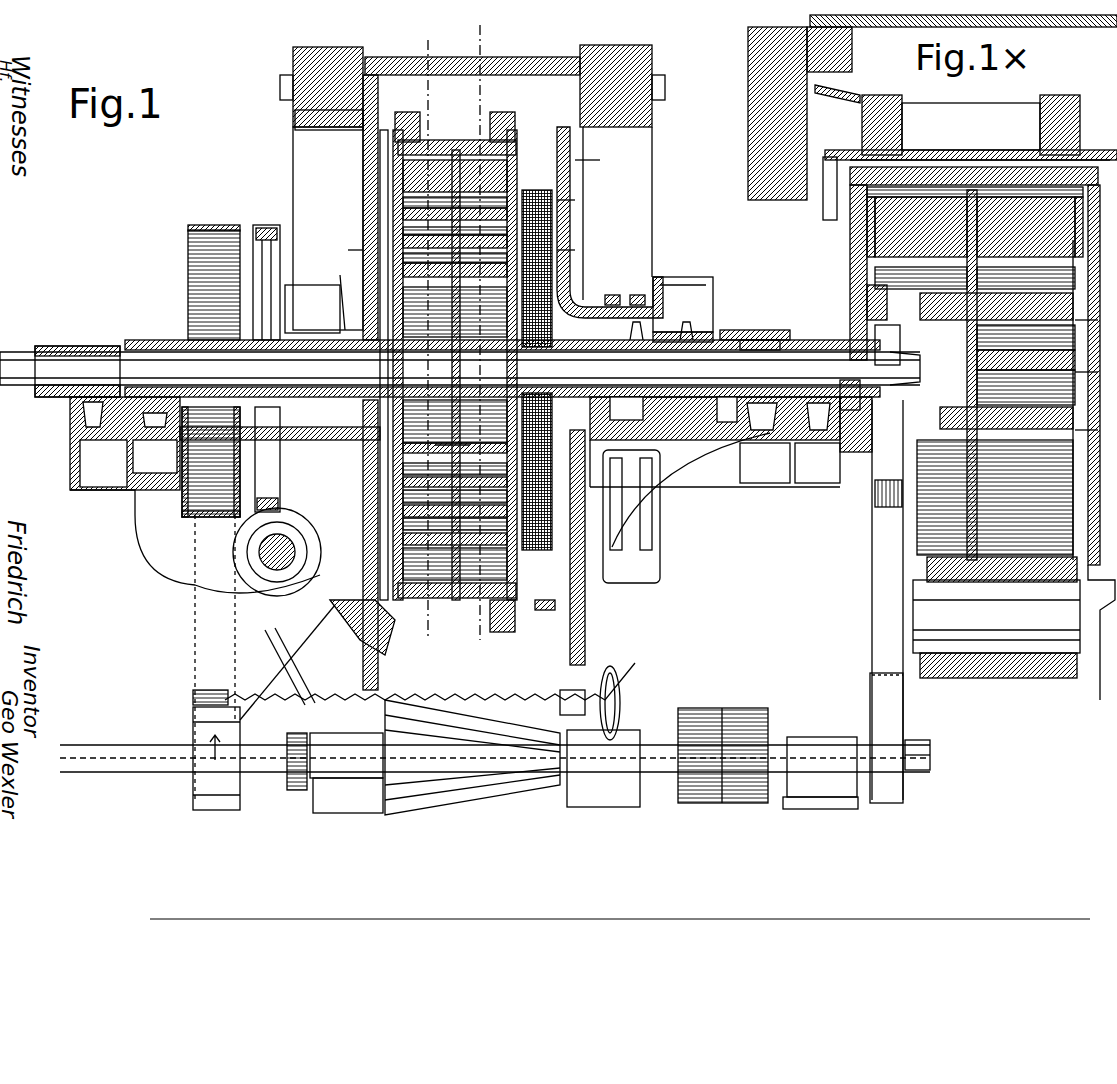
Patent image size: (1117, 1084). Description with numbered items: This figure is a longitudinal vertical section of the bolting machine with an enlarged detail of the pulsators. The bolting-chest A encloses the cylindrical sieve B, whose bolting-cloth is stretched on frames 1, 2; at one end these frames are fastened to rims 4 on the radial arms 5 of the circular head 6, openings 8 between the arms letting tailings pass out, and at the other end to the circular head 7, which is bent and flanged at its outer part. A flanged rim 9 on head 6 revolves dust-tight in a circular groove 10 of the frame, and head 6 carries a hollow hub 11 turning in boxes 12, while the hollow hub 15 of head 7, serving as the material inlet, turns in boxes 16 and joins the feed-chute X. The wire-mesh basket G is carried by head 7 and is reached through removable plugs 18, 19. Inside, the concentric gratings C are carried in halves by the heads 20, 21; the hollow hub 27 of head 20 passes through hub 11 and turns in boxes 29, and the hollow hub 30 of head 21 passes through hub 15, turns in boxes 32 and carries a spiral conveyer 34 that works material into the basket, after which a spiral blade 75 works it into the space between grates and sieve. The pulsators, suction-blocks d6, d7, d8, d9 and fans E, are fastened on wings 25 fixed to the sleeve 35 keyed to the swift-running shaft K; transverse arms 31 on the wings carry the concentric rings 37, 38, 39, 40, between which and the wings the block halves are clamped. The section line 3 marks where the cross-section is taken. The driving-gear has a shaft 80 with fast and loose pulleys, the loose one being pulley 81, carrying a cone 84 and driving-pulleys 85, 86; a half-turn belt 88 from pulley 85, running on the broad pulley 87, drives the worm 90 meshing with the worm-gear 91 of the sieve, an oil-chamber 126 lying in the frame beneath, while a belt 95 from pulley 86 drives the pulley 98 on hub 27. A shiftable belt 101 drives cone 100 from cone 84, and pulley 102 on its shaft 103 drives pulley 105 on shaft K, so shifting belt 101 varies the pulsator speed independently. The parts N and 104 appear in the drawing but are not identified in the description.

In FIG. 1, the swift-running shaft K is at (925, 360).
In FIG. 1x, the swift-running shaft K is at (996, 616).
In FIG. 1, the boxes 29 is at (148, 340).
In FIG. 1, the hollow hub 27 is at (118, 345).
In FIG. 1, the circular groove 10 is at (385, 62).
In FIG. 1x, the circular groove 10 is at (840, 65).
In FIG. 1, the flanged rim 9 is at (310, 75).
In FIG. 1x, the flanged rim 9 is at (964, 167).
In FIG. 1, the bolting-chest A is at (293, 126).
In FIG. 1, the head 21 is at (560, 140).
In FIG. 1x, the head 21 is at (1095, 442).
In FIG. 1, the concentric ring 37 is at (575, 155).
In FIG. 1x, the concentric ring 37 is at (866, 220).
In FIG. 1, the circular head 7 is at (545, 175).
In FIG. 1, the concentric ring 38 is at (520, 195).
In FIG. 1x, the concentric ring 38 is at (1096, 320).
In FIG. 1, the concentric ring 39 is at (560, 250).
In FIG. 1x, the concentric ring 39 is at (1096, 372).
In FIG. 1, the hollow hub 15 is at (593, 305).
In FIG. 1, the boxes 16 is at (618, 305).
In FIG. 1, the feed-chute X is at (680, 290).
In FIG. 1, the spiral conveyer 34 is at (661, 332).
In FIG. 1, the boxes 32 is at (755, 325).
In FIG. 1, the hollow hub 30 is at (795, 342).
In FIG. 1, the radial arms 5 is at (383, 170).
In FIG. 1, the openings 8 is at (393, 190).
In FIG. 1, the head 20 is at (363, 232).
In FIG. 1x, the head 20 is at (850, 268).
In FIG. 1, the circular head 6 is at (363, 252).
In FIG. 1, the hollow hub 11 is at (336, 294).
In FIG. 1, the boxes 12 is at (325, 330).
In FIG. 1, the spiral blade 75 is at (545, 625).
In FIG. 1, the rims 4 is at (400, 112).
In FIG. 1x, the rims 4 is at (840, 88).
In FIG. 1, the frame 1 is at (502, 112).
In FIG. 1x, the frame 1 is at (1055, 100).
In FIG. 1, the sieve B is at (445, 140).
In FIG. 1x, the sieve B is at (980, 144).
In FIG. 1, the wings 25 is at (458, 150).
In FIG. 1x, the wings 25 is at (995, 497).
In FIG. 1, the frame 2 is at (482, 30).
In FIG. 1x, the frame 2 is at (971, 126).
In FIG. 1, the section line 3 is at (430, 42).
In FIG. 1, the transverse arms 31 is at (455, 250).
In FIG. 1x, the transverse arms 31 is at (970, 395).
In FIG. 1, the sleeve 35 is at (455, 421).
In FIG. 1x, the sleeve 35 is at (1010, 570).
In FIG. 1, the fan E is at (455, 511).
In FIG. 1, the concentric gratings C is at (450, 512).
In FIG. 1x, the concentric gratings C is at (974, 182).
In FIG. 1, the wire-mesh cylindrical basket G is at (555, 245).
In FIG. 1, the removable plug 18 is at (615, 547).
In FIG. 1, the removable plug 19 is at (590, 505).
In FIG. 1, the column 104 is at (870, 545).
In FIG. 1, the pulley 102 is at (870, 682).
In FIG. 1, the shaft 103 is at (920, 740).
In FIG. 1, the pulley 87 is at (235, 545).
In FIG. 1, the pulley 98 is at (200, 230).
In FIG. 1, the worm-gear 91 is at (265, 225).
In FIG. 1, the worm 90 is at (255, 560).
In FIG. 1, the oil-chamber 126 is at (255, 590).
In FIG. 1, the half-turn belt 88 is at (275, 650).
In FIG. 1, the arm N is at (357, 631).
In FIG. 1, the belt 95 is at (210, 689).
In FIG. 1, the shaft 80 is at (660, 772).
In FIG. 1, the driving-pulley 86 is at (193, 715).
In FIG. 1, the driving-pulley 85 is at (287, 790).
In FIG. 1, the cone 84 is at (475, 757).
In FIG. 1, the shiftable endless belt 101 is at (565, 700).
In FIG. 1, the cone 100 is at (430, 741).
In FIG. 1, the loose driven pulley 81 is at (740, 712).
In FIG. 1x, the suction-block d6 is at (975, 227).
In FIG. 1x, the pulley 105 is at (883, 325).
In FIG. 1x, the suction-block d7 is at (996, 306).
In FIG. 1x, the suction-block d8 is at (1026, 360).
In FIG. 1x, the suction-block d9 is at (1006, 418).
In FIG. 1x, the concentric ring 40 is at (1096, 429).